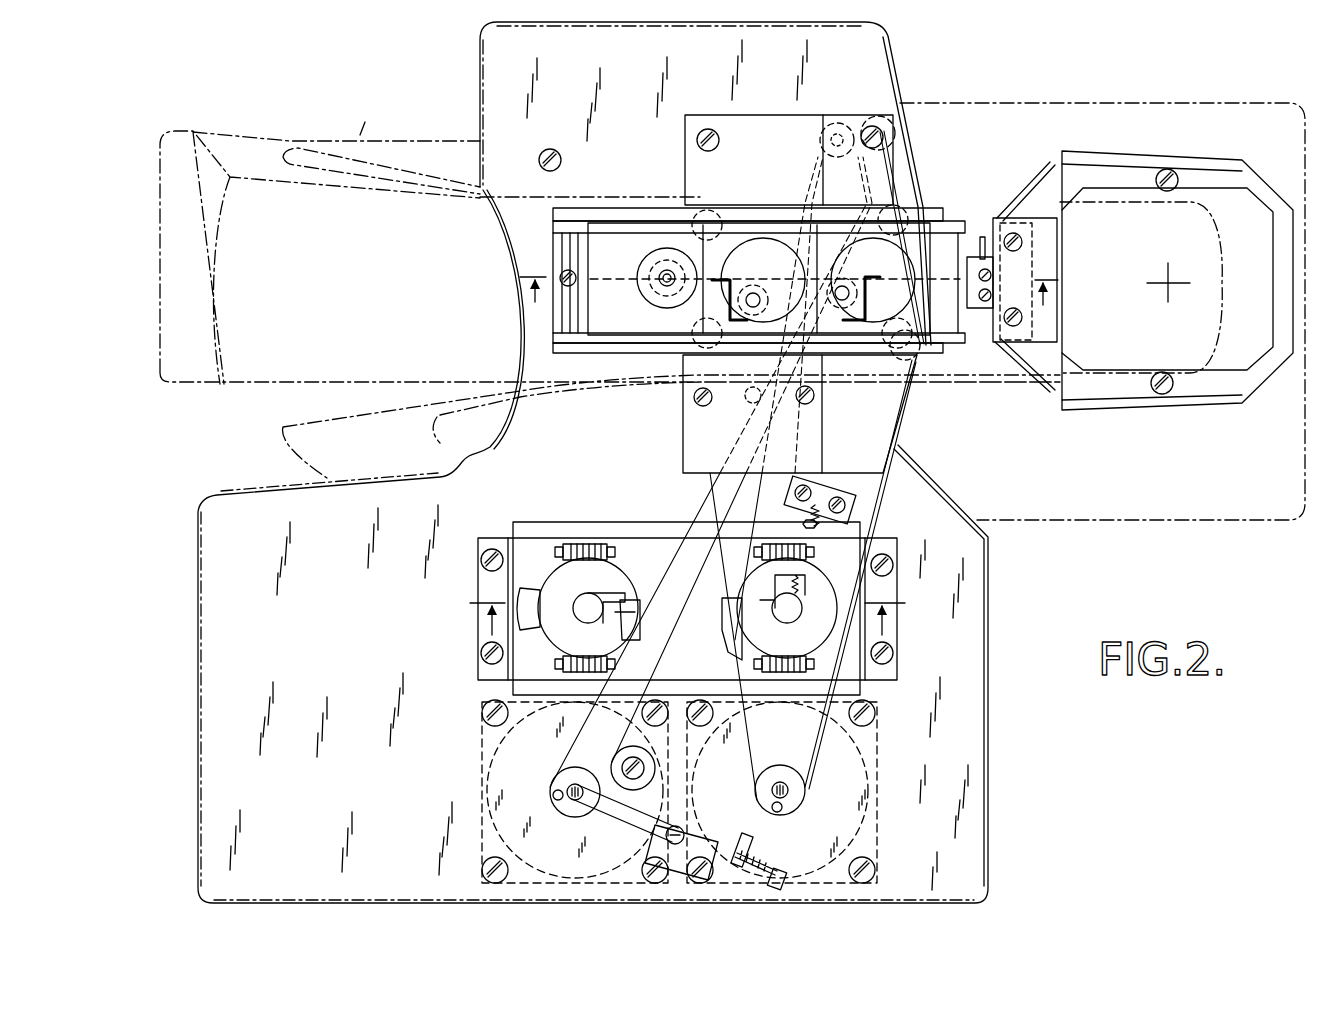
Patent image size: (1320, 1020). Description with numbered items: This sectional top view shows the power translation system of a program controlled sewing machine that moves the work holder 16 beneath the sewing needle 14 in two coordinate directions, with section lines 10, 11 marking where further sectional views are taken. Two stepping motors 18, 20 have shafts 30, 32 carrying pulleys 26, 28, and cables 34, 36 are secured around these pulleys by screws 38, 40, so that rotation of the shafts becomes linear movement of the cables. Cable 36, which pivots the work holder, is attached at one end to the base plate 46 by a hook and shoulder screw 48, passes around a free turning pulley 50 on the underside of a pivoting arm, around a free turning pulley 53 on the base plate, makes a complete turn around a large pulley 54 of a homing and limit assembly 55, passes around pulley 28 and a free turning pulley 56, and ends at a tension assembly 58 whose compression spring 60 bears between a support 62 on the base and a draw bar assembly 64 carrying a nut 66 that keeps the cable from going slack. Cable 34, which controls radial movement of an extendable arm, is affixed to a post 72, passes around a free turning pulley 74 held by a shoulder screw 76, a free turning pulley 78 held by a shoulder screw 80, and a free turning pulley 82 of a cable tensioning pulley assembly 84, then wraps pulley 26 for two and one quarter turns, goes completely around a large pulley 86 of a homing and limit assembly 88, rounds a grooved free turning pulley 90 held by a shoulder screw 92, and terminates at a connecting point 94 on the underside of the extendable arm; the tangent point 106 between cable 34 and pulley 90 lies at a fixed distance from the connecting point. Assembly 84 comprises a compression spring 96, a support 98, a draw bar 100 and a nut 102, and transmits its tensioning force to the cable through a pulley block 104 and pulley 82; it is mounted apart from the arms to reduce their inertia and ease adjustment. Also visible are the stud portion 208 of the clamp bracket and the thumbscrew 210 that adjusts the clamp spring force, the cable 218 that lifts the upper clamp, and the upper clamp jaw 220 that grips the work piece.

The section line 10- 10 is at (790, 277).
The section line 11- 11 is at (687, 607).
The sewing needle 14 is at (1166, 285).
The work holder 16 is at (1208, 404).
The stepping motor 18 is at (482, 750).
The stepping motor 20 is at (877, 833).
The pulley 26 is at (572, 811).
The pulley 28 is at (780, 766).
The shaft 30 is at (568, 785).
The shaft 32 is at (790, 790).
The cable 34 is at (683, 540).
The cable 36 is at (822, 717).
The screw 38 is at (553, 794).
The screw 40 is at (783, 808).
The base plate 46 is at (354, 633).
The hook and shoulder screw 48 is at (892, 133).
The free turning pulley 50 is at (936, 204).
The free turning pulley 53 is at (837, 123).
The large pulley 54 is at (745, 593).
The homing and limit assembly 55 is at (752, 624).
The free turning pulley 56 is at (922, 350).
The tension assembly 58 is at (858, 503).
The compression spring 60 is at (800, 506).
The support 62 is at (855, 493).
The draw bar assembly 64 is at (820, 473).
The nut 66 is at (818, 531).
The post 72 is at (575, 285).
The free turning pulley 74 is at (758, 280).
The shoulder screw 76 is at (763, 283).
The free turning pulley 78 is at (620, 760).
The shoulder screw 80 is at (633, 788).
The free turning pulley 82 is at (648, 846).
The cable tensioning pulley assembly 84 is at (712, 806).
The large pulley 86 is at (555, 640).
The homing and limit assembly 88 is at (545, 560).
The free turning pulley 90 is at (866, 293).
The shoulder screw 92 is at (833, 268).
The connecting point 94 is at (964, 282).
The compression spring 96 is at (718, 882).
The support 98 is at (766, 857).
The draw bar 100 is at (750, 848).
The nut 102 is at (780, 884).
The pulley block 104 is at (722, 836).
The tangent point 106 is at (857, 270).
The stud portion 208 is at (664, 275).
The thumbscrew 210 is at (662, 303).
The cable 218 is at (984, 234).
The upper clamp jaw 220 is at (1138, 390).